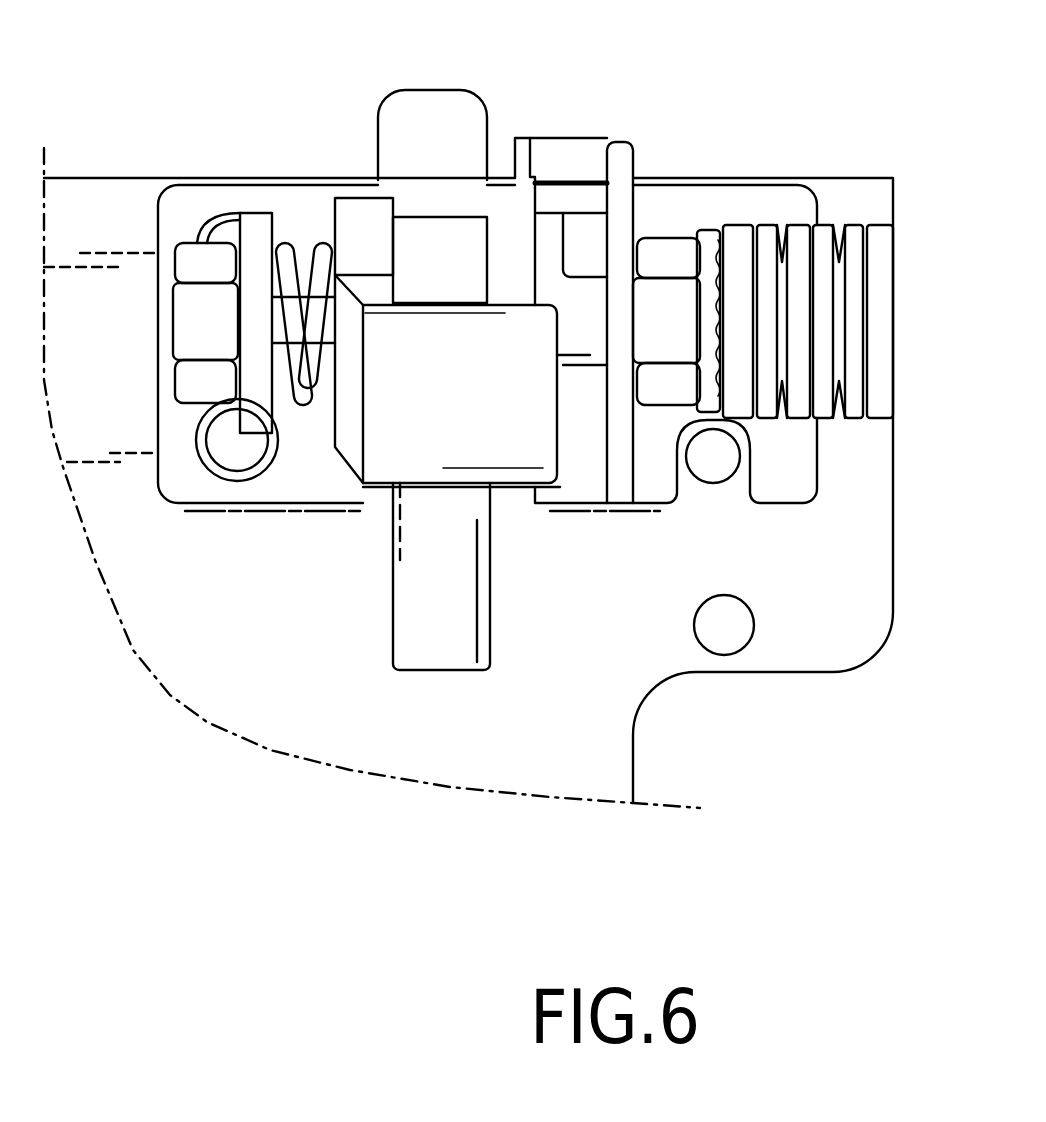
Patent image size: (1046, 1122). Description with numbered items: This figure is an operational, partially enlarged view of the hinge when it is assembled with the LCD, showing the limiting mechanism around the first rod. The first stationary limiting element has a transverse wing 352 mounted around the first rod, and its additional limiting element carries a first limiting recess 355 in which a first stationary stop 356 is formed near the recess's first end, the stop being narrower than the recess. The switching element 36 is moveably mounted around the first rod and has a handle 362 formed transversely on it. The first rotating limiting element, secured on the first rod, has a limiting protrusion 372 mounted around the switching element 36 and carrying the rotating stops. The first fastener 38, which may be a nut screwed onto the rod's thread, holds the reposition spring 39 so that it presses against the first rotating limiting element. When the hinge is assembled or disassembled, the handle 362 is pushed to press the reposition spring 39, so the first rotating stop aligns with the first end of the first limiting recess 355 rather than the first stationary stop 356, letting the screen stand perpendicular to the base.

The switching element 36 is at (430, 227).
The first fastener 38 is at (247, 222).
The reposition spring 39 is at (290, 262).
The transverse wing 352 is at (623, 157).
The first limiting recess 355 is at (575, 497).
The first stationary stop 356 is at (587, 232).
The handle 362 is at (413, 635).
The limiting protrusion 372 is at (407, 460).